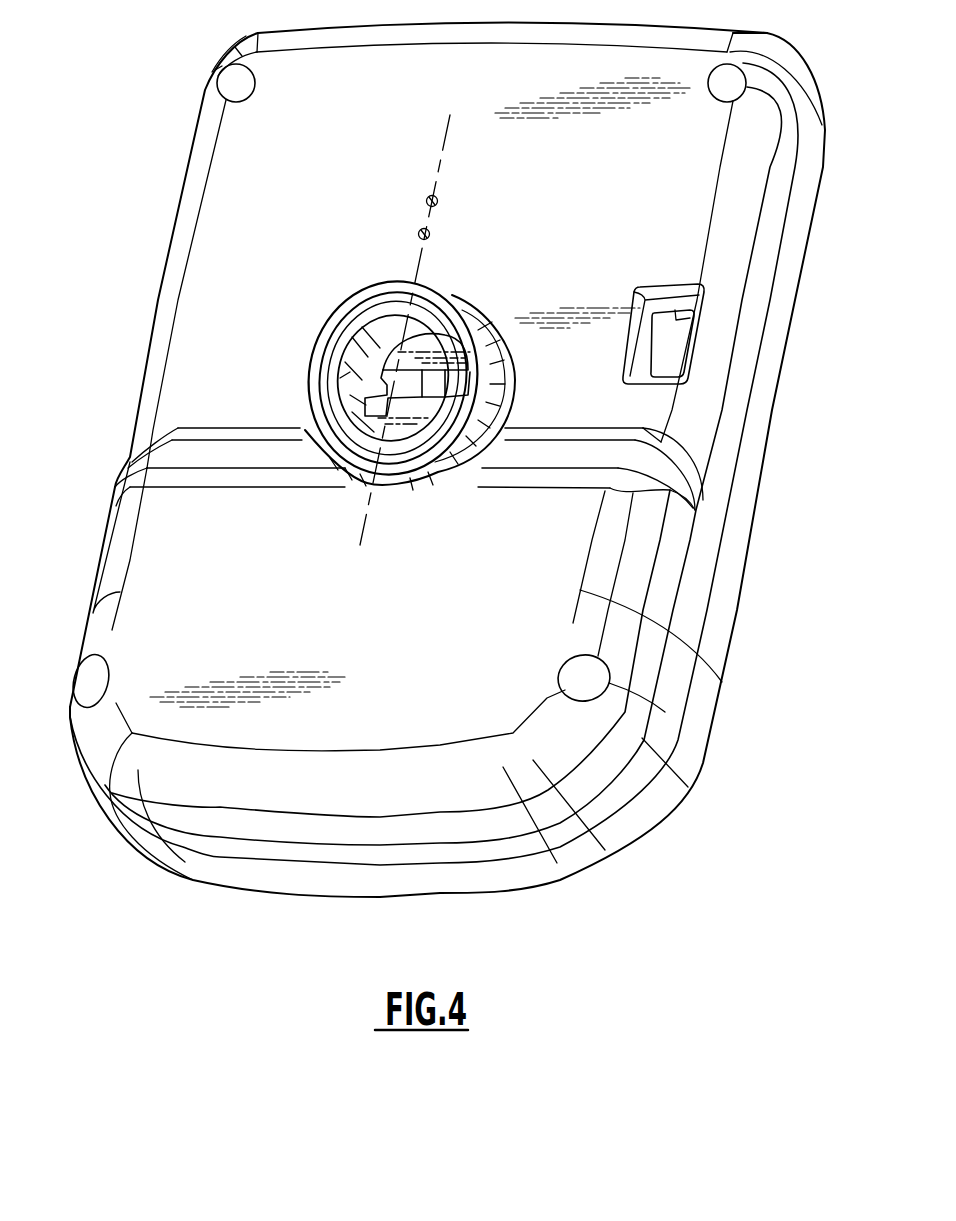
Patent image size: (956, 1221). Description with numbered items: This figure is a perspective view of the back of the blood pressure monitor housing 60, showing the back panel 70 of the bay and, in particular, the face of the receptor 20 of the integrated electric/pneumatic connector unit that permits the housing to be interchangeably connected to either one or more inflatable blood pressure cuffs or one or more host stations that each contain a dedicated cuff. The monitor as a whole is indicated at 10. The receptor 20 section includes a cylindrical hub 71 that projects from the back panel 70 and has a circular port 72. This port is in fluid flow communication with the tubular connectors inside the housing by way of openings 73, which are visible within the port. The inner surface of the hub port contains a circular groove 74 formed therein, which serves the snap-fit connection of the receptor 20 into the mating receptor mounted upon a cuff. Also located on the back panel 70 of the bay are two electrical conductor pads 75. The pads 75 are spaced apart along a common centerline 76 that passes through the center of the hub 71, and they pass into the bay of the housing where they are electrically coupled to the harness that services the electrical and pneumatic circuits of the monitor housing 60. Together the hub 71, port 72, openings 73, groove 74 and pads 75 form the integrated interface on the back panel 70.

The electronic device housing 10 is at (445, 452).
The receptor 20 is at (345, 306).
The blood pressure monitor housing 60 is at (774, 408).
The back panel 70 is at (560, 745).
The cylindrical hub 71 is at (500, 368).
The circular port 72 is at (358, 368).
The openings 73 is at (370, 398).
The circular groove 74 is at (381, 292).
The electrical conductor pads 75 is at (430, 234).
The common centerline 76 is at (447, 130).